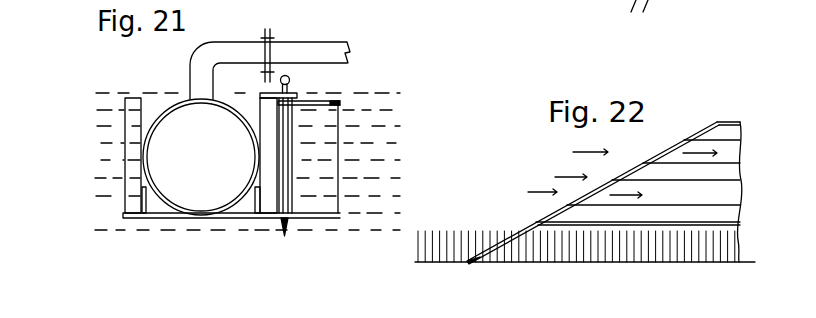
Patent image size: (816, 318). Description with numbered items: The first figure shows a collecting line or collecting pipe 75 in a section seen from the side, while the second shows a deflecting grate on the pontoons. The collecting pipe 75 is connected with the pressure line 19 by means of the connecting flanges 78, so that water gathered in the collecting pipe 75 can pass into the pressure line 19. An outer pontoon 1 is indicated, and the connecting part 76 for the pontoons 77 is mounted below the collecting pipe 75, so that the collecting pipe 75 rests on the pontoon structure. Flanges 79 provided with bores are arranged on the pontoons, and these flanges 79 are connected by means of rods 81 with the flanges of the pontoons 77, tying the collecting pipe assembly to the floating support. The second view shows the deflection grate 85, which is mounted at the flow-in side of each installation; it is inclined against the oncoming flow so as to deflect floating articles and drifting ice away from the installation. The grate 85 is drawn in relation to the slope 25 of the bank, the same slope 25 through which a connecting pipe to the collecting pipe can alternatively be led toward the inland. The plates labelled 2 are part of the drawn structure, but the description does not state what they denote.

In FIG. 21, the outer pontoon 1 is at (333, 157).
In FIG. 21, the collecting pipe 75 is at (183, 118).
In FIG. 21, the pressure line 19 is at (349, 53).
In FIG. 21, the connecting flanges 78 is at (274, 33).
In FIG. 21, the rods 81 is at (290, 82).
In FIG. 21, the pontoons 77 is at (265, 205).
In FIG. 21, the connecting part 76 is at (168, 218).
In FIG. 21, the flanges with bores 79 is at (315, 218).
In FIG. 22, the deflection grate 85 is at (527, 223).
In FIG. 22, the plates 2 is at (722, 215).
In FIG. 22, the slope 25 is at (705, 253).